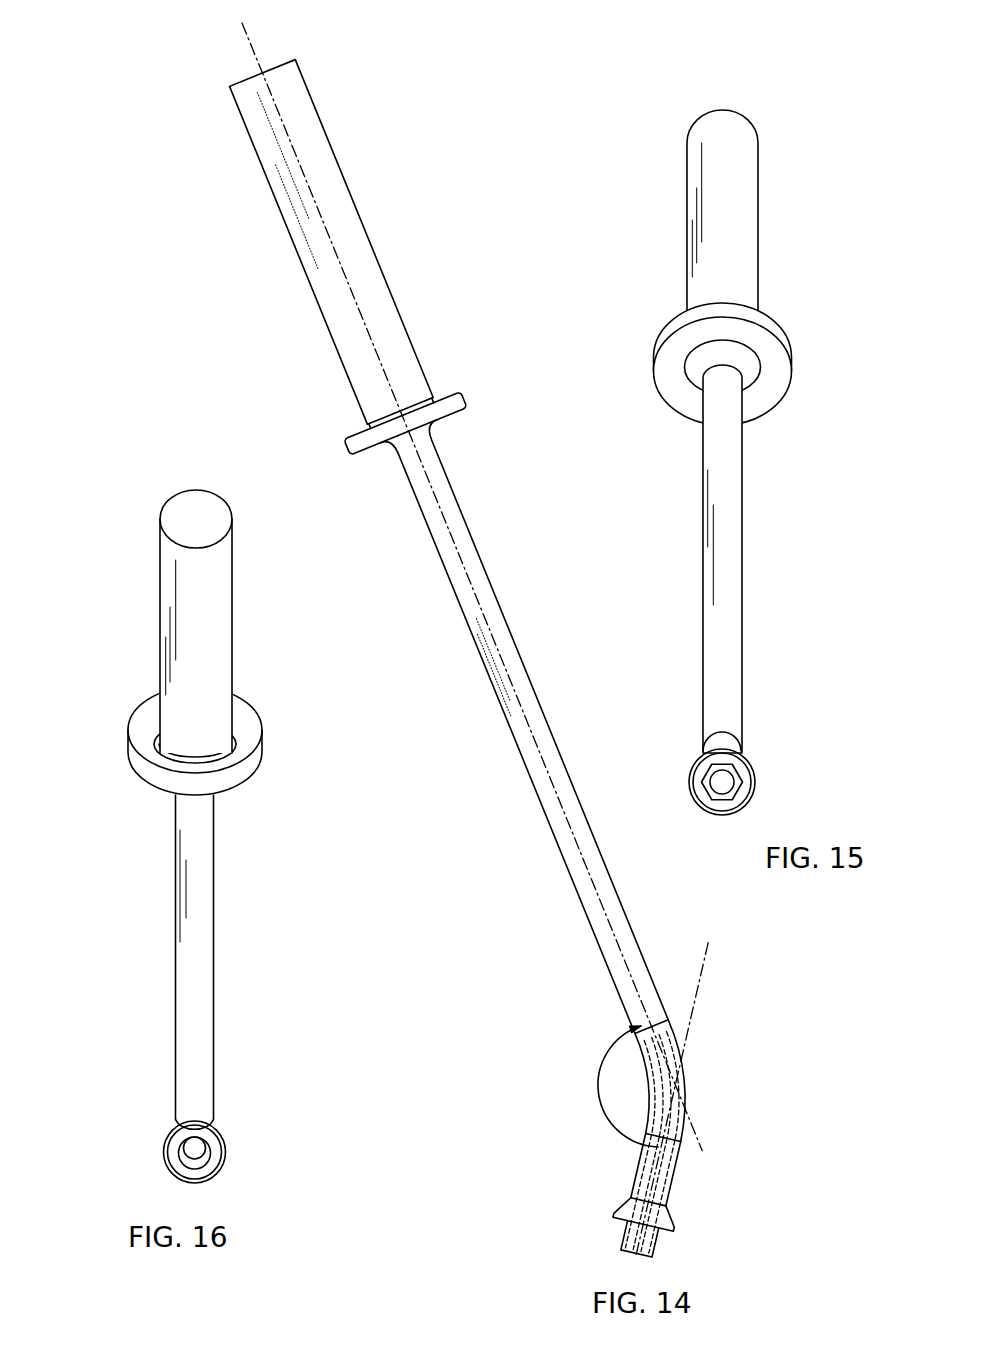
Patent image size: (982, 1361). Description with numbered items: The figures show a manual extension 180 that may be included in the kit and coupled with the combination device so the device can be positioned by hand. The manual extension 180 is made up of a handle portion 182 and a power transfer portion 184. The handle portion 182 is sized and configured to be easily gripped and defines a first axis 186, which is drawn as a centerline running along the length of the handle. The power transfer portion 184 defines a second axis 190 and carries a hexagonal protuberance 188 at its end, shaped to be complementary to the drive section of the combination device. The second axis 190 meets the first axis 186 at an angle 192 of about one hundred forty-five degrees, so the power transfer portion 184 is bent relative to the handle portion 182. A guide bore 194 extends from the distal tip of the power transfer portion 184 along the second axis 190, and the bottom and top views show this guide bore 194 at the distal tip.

In FIG. 14, the manual extension 180 is at (476, 296).
In FIG. 15, the manual extension 180 is at (850, 310).
In FIG. 16, the manual extension 180 is at (300, 701).
In FIG. 14, the handle portion 182 is at (330, 329).
In FIG. 15, the handle portion 182 is at (687, 262).
In FIG. 16, the handle portion 182 is at (160, 566).
In FIG. 14, the power transfer portion 184 is at (650, 1150).
In FIG. 16, the power transfer portion 184 is at (163, 1157).
In FIG. 14, the first axis 186 is at (460, 549).
In FIG. 14, the hexagonal protuberance 188 is at (616, 1245).
In FIG. 15, the hexagonal protuberance 188 is at (689, 782).
In FIG. 14, the second axis 190 is at (697, 1003).
In FIG. 14, the angle 192 is at (598, 1091).
In FIG. 14, the guide bore 194 is at (667, 1168).
In FIG. 15, the guide bore 194 is at (734, 782).
In FIG. 16, the guide bore 194 is at (206, 1147).